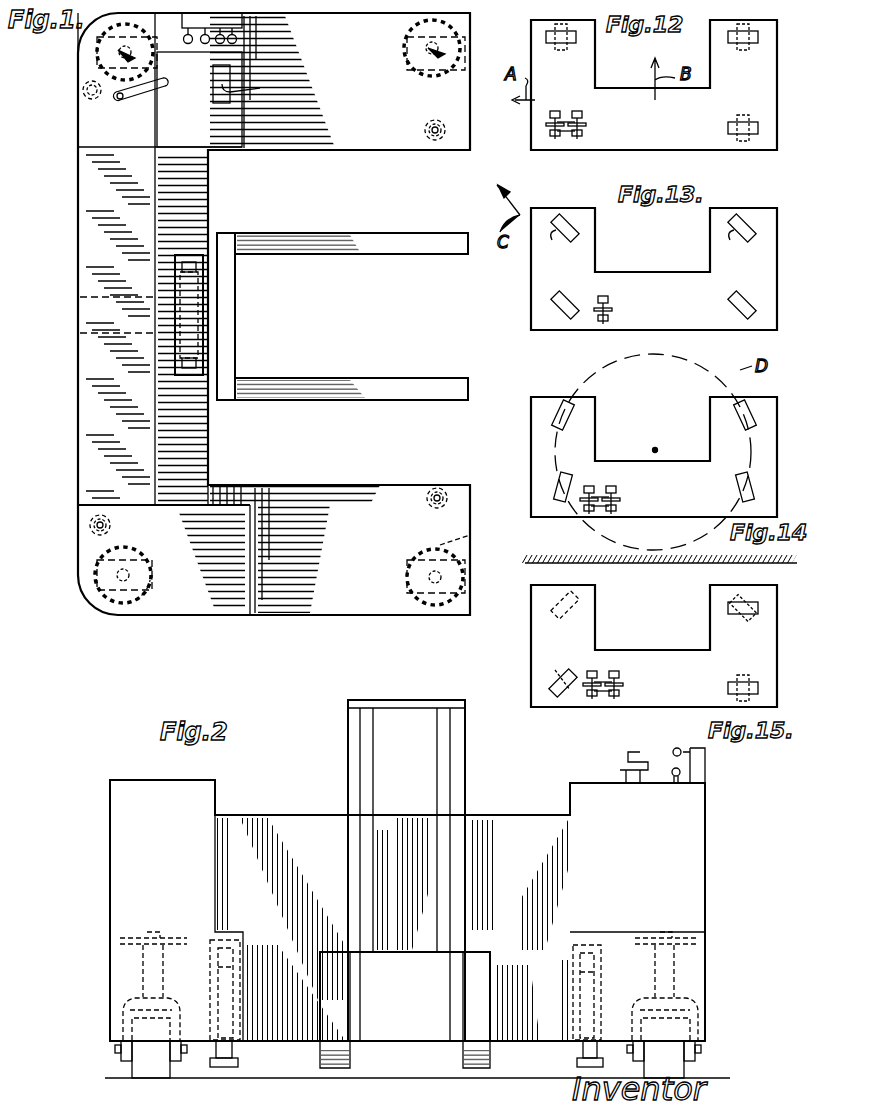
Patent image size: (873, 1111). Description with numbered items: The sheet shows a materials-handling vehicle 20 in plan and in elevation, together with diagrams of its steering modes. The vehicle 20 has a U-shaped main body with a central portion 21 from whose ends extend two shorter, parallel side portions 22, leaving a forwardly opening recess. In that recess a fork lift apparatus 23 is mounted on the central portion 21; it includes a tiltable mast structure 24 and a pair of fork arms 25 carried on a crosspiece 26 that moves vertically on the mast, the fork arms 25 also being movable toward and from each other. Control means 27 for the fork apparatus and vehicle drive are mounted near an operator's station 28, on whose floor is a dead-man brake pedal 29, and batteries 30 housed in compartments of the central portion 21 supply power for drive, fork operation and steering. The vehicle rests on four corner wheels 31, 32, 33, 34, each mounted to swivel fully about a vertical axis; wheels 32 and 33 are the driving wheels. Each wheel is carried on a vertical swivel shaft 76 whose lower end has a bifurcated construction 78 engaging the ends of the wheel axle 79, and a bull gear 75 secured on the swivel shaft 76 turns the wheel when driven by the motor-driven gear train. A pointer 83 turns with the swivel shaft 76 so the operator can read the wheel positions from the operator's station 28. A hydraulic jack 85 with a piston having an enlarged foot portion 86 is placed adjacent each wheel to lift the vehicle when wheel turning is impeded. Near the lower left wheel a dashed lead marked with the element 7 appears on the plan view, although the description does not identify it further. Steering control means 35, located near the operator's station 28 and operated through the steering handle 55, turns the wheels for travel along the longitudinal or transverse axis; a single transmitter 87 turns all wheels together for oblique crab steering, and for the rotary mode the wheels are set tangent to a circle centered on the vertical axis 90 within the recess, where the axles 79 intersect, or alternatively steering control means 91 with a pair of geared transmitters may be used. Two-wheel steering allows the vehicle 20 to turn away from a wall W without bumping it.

In FIG. 1, the gear rim 7 is at (148, 597).
In FIG. 1, the vehicle 20 is at (86, 252).
In FIG. 12, the vehicle 20 is at (785, 96).
In FIG. 13, the vehicle 20 is at (625, 272).
In FIG. 14, the vehicle 20 is at (778, 452).
In FIG. 15, the vehicle 20 is at (792, 652).
In FIG. 2, the vehicle 20 is at (316, 805).
In FIG. 1, the central portion 21 is at (92, 412).
In FIG. 2, the central portion 21 is at (525, 800).
In FIG. 1, the side portions 22 is at (322, 145).
In FIG. 2, the side portions 22 is at (112, 974).
In FIG. 1, the fork lift apparatus 23 is at (342, 343).
In FIG. 2, the fork lift apparatus 23 is at (430, 965).
In FIG. 1, the mast structure 24 is at (188, 375).
In FIG. 2, the mast structure 24 is at (465, 745).
In FIG. 1, the fork arms 25 is at (330, 252).
In FIG. 2, the fork arms 25 is at (356, 1018).
In FIG. 1, the crosspiece 26 is at (232, 313).
In FIG. 2, the crosspiece 26 is at (405, 972).
In FIG. 1, the control means 27 is at (205, 86).
In FIG. 2, the control means 27 is at (666, 752).
In FIG. 1, the operator's station 28 is at (160, 80).
In FIG. 1, the dead-man brake pedal 29 is at (253, 90).
In FIG. 1, the batteries 30 is at (82, 348).
In FIG. 1, the left front wheel 31 is at (400, 75).
In FIG. 12, the left front wheel 31 is at (572, 50).
In FIG. 13, the left front wheel 31 is at (562, 240).
In FIG. 14, the left front wheel 31 is at (557, 420).
In FIG. 15, the left front wheel 31 is at (566, 600).
In FIG. 2, the left front wheel 31 is at (670, 1072).
In FIG. 1, the wheel 32 is at (100, 57).
In FIG. 13, the wheel 32 is at (574, 292).
In FIG. 14, the wheel 32 is at (553, 485).
In FIG. 15, the wheel 32 is at (556, 682).
In FIG. 1, the wheel 33 is at (150, 565).
In FIG. 12, the wheel 33 is at (728, 128).
In FIG. 13, the wheel 33 is at (732, 312).
In FIG. 14, the wheel 33 is at (752, 495).
In FIG. 15, the wheel 33 is at (728, 686).
In FIG. 1, the wheel 34 is at (405, 578).
In FIG. 12, the wheel 34 is at (735, 50).
In FIG. 13, the wheel 34 is at (742, 242).
In FIG. 14, the wheel 34 is at (752, 405).
In FIG. 15, the wheel 34 is at (746, 616).
In FIG. 2, the wheel 34 is at (145, 1070).
In FIG. 12, the steering control means 35 is at (606, 125).
In FIG. 15, the steering control means 35 is at (637, 688).
In FIG. 1, the steering handle 55 is at (140, 95).
In FIG. 2, the steering handle 55 is at (630, 765).
In FIG. 1, the bull gear 75 is at (470, 535).
In FIG. 2, the bull gear 75 is at (175, 936).
In FIG. 2, the swivel shaft 76 is at (158, 980).
In FIG. 2, the bifurcated construction 78 is at (185, 1062).
In FIG. 2, the wheel axle 79 is at (114, 1050).
In FIG. 1, the pointer 83 is at (215, 52).
In FIG. 1, the hydraulic jack 85 is at (424, 130).
In FIG. 2, the hydraulic jack 85 is at (232, 1050).
In FIG. 1, the foot portions 86 is at (430, 140).
In FIG. 2, the foot portions 86 is at (241, 1064).
In FIG. 13, the transmitter 87 is at (610, 306).
In FIG. 14, the vertical axis 90 is at (656, 449).
In FIG. 14, the steering control means 91 is at (637, 494).
In FIG. 14, the wall W is at (655, 565).